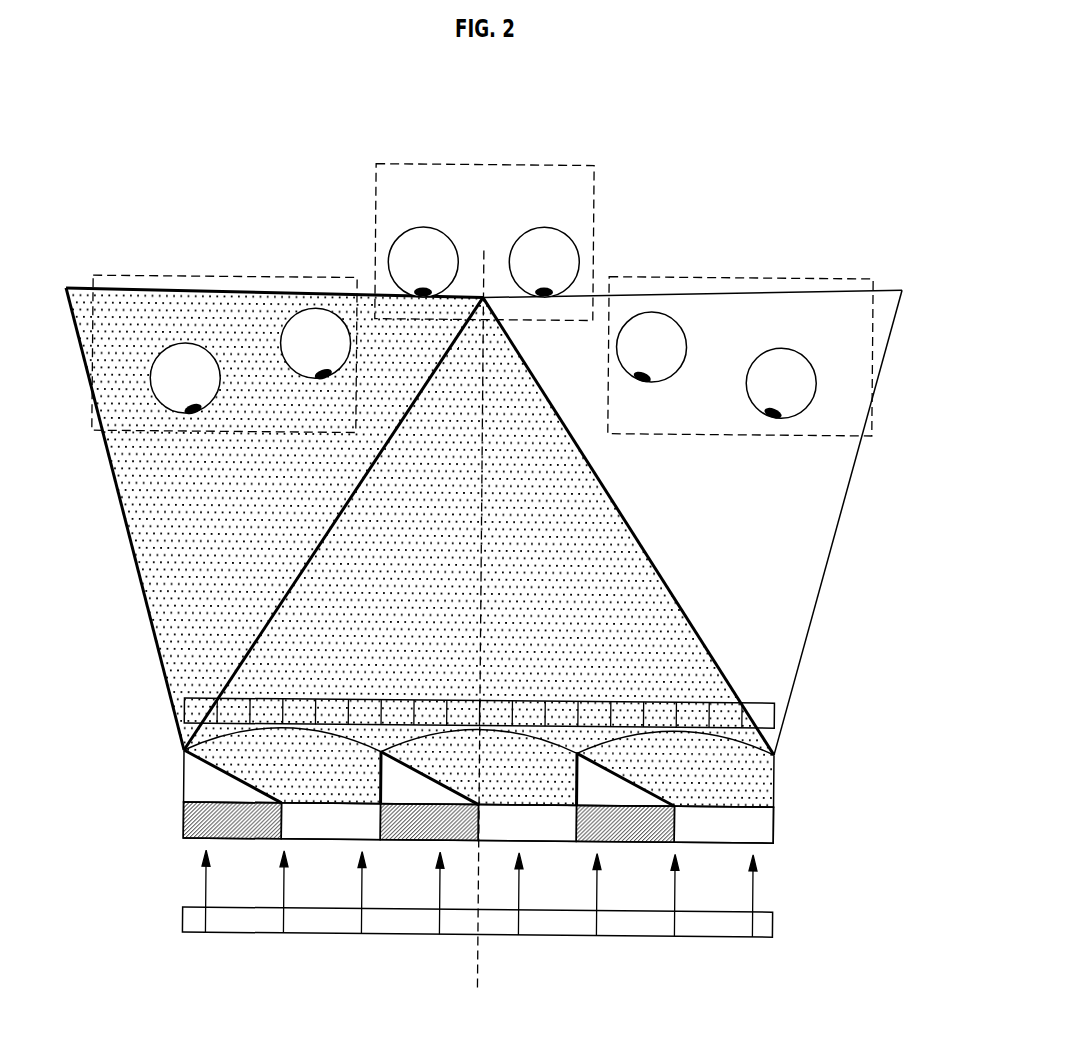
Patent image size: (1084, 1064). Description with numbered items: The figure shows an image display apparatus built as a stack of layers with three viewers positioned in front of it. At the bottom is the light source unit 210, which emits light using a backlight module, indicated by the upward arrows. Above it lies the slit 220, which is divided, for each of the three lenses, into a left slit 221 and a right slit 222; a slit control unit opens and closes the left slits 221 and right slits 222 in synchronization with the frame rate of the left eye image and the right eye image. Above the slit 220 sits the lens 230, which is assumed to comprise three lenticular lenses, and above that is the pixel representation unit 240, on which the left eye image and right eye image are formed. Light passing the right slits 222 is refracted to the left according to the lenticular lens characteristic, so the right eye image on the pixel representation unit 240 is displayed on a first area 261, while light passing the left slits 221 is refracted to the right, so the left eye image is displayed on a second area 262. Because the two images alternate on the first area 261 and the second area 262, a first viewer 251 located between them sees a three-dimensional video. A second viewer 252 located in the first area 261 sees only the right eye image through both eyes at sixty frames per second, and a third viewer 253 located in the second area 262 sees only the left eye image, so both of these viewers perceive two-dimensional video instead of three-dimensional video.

The light source unit 210 is at (775, 912).
The slit 220 is at (537, 904).
The left slit 221 is at (242, 838).
The right slit 222 is at (325, 838).
The lens 230 is at (775, 774).
The pixel representation unit 240 is at (775, 707).
The first viewer 251 is at (481, 162).
The second viewer 252 is at (223, 276).
The third viewer 253 is at (740, 273).
The first area 261 is at (219, 456).
The second area 262 is at (735, 458).